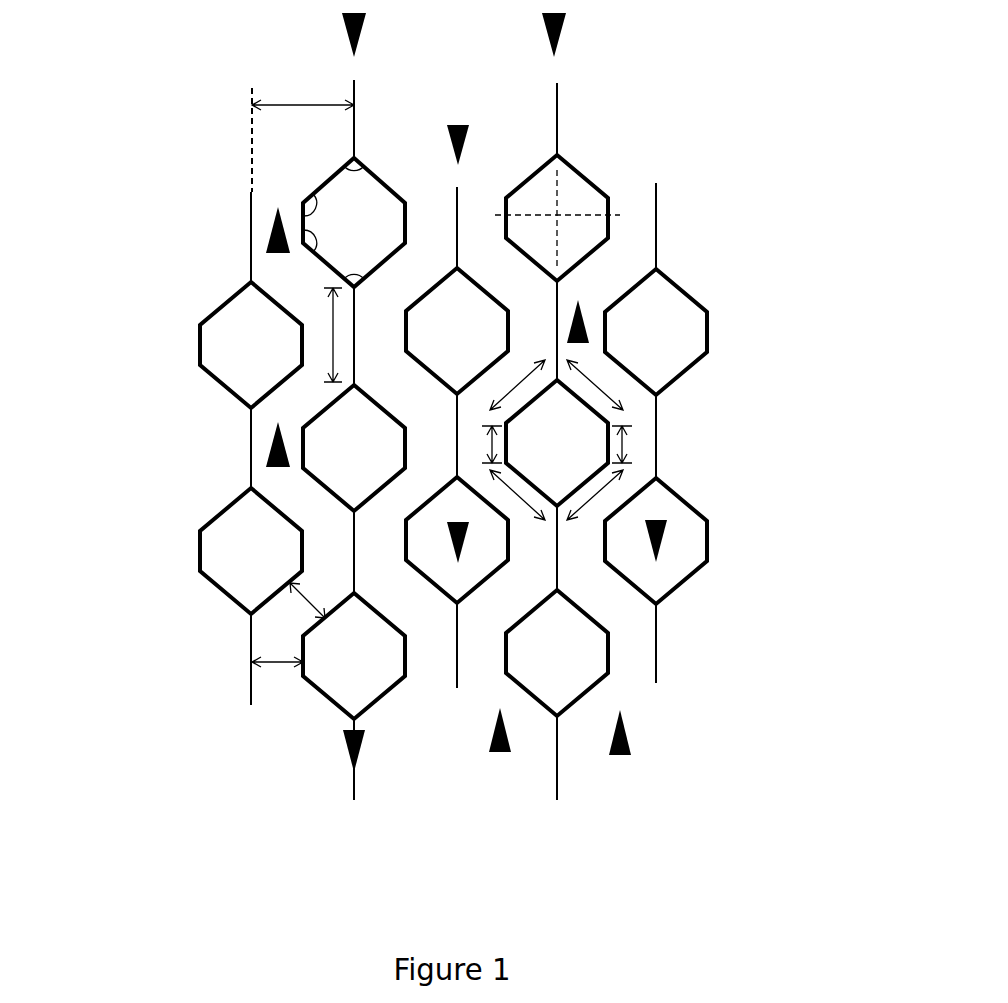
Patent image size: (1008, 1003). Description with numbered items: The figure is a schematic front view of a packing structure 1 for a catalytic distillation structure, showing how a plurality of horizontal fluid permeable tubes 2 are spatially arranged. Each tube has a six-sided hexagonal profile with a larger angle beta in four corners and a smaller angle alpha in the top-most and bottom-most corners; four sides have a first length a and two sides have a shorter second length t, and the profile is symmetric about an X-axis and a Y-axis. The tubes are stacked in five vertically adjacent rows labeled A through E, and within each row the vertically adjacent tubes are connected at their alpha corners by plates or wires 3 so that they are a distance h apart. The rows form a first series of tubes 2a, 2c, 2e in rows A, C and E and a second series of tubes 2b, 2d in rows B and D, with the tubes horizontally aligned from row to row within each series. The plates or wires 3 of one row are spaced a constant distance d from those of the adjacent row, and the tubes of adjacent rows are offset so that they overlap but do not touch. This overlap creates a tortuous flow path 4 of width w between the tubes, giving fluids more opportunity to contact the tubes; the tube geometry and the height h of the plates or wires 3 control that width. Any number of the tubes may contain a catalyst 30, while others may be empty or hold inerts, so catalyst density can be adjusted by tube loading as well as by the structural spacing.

The packing structure 1 is at (620, 129).
The horizontal fluid permeable tubes 2 is at (513, 455).
The horizontal fluid permeable tubes of row A 2a is at (232, 308).
The horizontal fluid permeable tubes of row B 2b is at (386, 196).
The horizontal fluid permeable tubes of row C 2c is at (438, 302).
The horizontal fluid permeable tubes of row D 2d is at (532, 195).
The horizontal fluid permeable tubes of row E 2e is at (641, 300).
The plates or wires 3 is at (353, 533).
The tortuous flow path 4 is at (423, 452).
The catalyst 30 is at (638, 337).